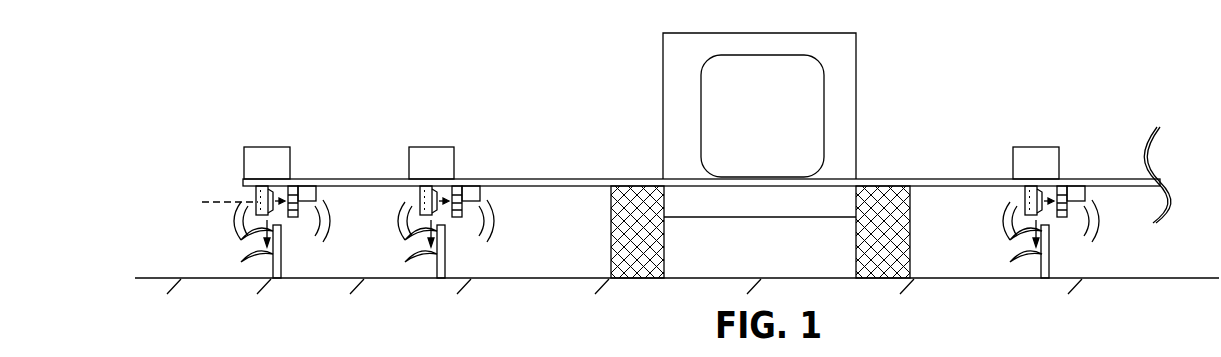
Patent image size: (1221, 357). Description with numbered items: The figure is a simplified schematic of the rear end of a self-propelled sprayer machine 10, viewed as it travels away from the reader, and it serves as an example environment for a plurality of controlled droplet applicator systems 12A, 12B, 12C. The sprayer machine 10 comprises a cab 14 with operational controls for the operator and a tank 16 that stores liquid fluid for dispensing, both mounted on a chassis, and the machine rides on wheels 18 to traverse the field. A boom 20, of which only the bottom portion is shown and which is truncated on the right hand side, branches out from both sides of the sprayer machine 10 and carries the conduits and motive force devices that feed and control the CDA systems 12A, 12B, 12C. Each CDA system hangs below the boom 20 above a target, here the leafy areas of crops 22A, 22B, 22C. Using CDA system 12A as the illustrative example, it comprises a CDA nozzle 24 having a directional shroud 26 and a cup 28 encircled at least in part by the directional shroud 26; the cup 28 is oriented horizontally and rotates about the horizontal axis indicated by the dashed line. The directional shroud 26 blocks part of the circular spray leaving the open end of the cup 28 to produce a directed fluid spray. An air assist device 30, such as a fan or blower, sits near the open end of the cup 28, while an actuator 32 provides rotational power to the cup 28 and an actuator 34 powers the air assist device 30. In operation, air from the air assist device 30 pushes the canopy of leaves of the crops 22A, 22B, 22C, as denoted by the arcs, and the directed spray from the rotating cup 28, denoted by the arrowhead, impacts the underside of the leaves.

The self-propelled sprayer machine 10 is at (941, 77).
The controlled droplet applicator system 12A is at (279, 122).
The controlled droplet applicator system 12B is at (448, 122).
The controlled droplet applicator system 12C is at (1055, 121).
The cab 14 is at (857, 125).
The tank 16 is at (773, 127).
The wheels 18 is at (613, 234).
The boom 20 is at (569, 178).
The crop 22A is at (278, 247).
The crop 22B is at (446, 250).
The crop 22C is at (1049, 252).
The CDA nozzle 24 is at (245, 215).
The directional shroud 26 is at (257, 191).
The cup 28 is at (279, 205).
The air assist device 30 is at (299, 213).
The actuator 32 is at (278, 171).
The actuator 34 is at (318, 193).